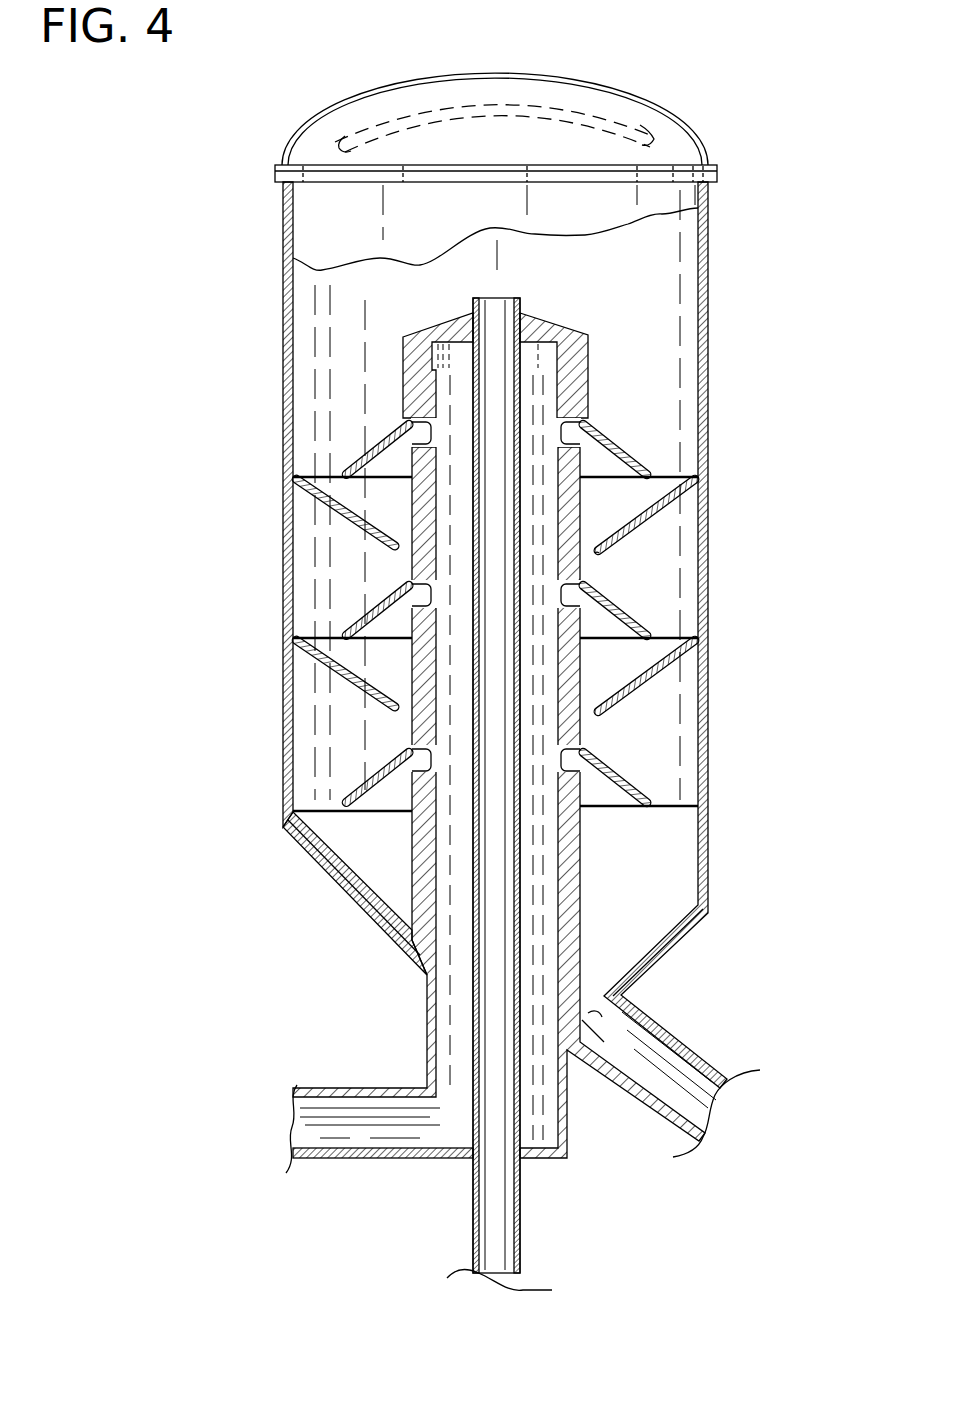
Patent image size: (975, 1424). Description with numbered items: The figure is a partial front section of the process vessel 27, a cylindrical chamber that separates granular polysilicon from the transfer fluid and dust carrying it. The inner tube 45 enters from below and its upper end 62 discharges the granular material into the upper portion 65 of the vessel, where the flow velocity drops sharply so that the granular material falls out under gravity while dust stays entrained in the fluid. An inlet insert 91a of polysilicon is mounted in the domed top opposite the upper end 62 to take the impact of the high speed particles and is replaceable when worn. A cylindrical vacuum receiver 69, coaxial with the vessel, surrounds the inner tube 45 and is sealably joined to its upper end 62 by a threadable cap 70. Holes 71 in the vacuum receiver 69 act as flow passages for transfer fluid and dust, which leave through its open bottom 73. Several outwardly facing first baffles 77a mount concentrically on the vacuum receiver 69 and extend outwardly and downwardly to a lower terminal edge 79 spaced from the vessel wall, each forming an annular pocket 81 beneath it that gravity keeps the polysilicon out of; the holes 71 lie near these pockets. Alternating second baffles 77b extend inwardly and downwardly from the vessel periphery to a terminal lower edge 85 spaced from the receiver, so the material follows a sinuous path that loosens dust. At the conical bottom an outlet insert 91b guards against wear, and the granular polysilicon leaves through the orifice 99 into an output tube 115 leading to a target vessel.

The inlet insert 91a is at (652, 98).
The upper portion of the process vessel 65 is at (540, 264).
The upper end of the feed tube 62 is at (518, 310).
The threadable cap 70 is at (588, 352).
The process vessel 27 is at (711, 386).
The holes 71 is at (408, 425).
The first baffle 77a is at (368, 450).
The lower terminal edge 79 is at (285, 512).
The annular pocket 81 is at (593, 457).
The second baffle 77b is at (650, 518).
The terminal lower edge 85 is at (597, 552).
The vacuum receiver 69 is at (582, 730).
The outlet insert 91b is at (350, 880).
The orifice 99 is at (670, 1033).
The output tube 115 is at (672, 1128).
The open bottom 73 is at (470, 1106).
The inner tube 45 is at (523, 1252).